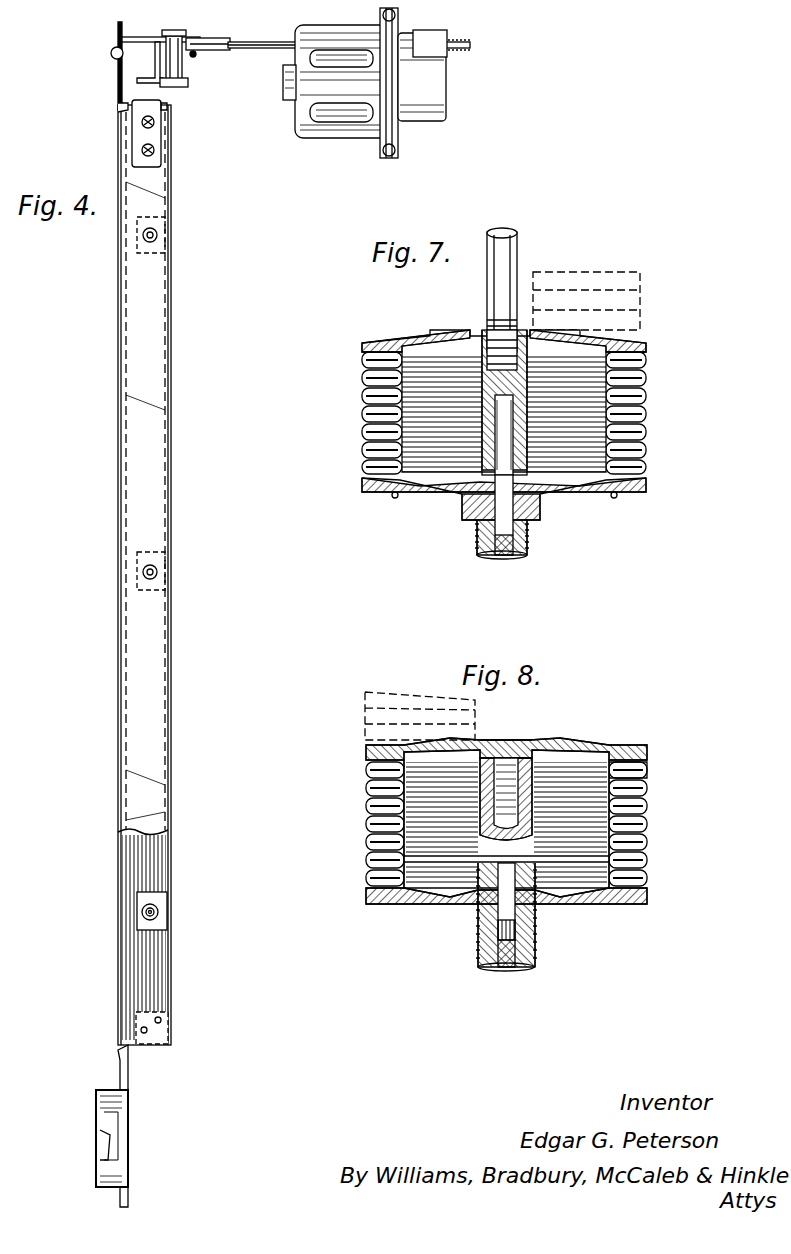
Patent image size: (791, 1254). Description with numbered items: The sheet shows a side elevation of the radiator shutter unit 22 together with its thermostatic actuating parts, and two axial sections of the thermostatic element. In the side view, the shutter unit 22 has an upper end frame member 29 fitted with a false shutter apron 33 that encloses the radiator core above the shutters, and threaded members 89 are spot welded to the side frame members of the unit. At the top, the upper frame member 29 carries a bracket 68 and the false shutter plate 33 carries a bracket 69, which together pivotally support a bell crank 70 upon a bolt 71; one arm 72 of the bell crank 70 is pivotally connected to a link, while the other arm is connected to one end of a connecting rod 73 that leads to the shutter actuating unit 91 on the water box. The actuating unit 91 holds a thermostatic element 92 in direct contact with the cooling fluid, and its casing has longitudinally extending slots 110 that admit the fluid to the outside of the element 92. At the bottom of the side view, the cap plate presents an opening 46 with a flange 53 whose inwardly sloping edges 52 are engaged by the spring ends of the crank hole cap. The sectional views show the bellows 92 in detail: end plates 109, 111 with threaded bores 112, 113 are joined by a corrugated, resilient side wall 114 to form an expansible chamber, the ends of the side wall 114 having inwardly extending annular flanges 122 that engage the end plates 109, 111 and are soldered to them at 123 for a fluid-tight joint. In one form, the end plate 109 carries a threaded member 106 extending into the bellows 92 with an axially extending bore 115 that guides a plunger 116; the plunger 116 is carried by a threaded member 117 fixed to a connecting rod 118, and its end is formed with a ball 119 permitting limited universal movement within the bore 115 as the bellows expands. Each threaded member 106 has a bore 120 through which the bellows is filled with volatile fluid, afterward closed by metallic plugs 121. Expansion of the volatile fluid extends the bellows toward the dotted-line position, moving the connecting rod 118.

In FIG. 4, the radiator shutter unit 22 is at (116, 601).
In FIG. 4, the upper end frame member 29 is at (166, 108).
In FIG. 4, the false shutter apron 33 is at (116, 37).
In FIG. 4, the opening 46 is at (96, 1104).
In FIG. 4, the inwardly sloping edges 52 is at (112, 1132).
In FIG. 4, the flange 53 is at (102, 1150).
In FIG. 4, the bracket 68 is at (160, 96).
In FIG. 4, the bracket 69 is at (143, 36).
In FIG. 4, the bell crank 70 is at (150, 66).
In FIG. 4, the bolt 71 is at (178, 34).
In FIG. 4, the arm 72 is at (198, 54).
In FIG. 4, the connecting rod 73 is at (255, 42).
In FIG. 4, the threaded members 89 is at (142, 915).
In FIG. 4, the shutter actuating unit 91 is at (448, 95).
In FIG. 8, the thermostatic element 92 is at (648, 836).
In FIG. 7, the threaded member 106 is at (528, 540).
In FIG. 8, the threaded member 106 is at (478, 938).
In FIG. 8, the end plate 109 is at (560, 898).
In FIG. 4, the longitudinally extending slots 110 is at (335, 115).
In FIG. 8, the end plate 111 is at (570, 738).
In FIG. 8, the threaded bore 112 is at (535, 900).
In FIG. 8, the threaded bore 113 is at (522, 770).
In FIG. 8, the side wall 114 is at (648, 802).
In FIG. 7, the axially extending bore 115 is at (482, 400).
In FIG. 7, the plunger 116 is at (522, 440).
In FIG. 7, the threaded member 117 is at (490, 330).
In FIG. 7, the connecting rod 118 is at (512, 258).
In FIG. 7, the ball 119 is at (475, 480).
In FIG. 7, the bore 120 is at (470, 520).
In FIG. 7, the metallic plugs 121 is at (504, 560).
In FIG. 7, the inwardly extending annular flanges 122 is at (378, 340).
In FIG. 7, the solder 123 is at (390, 340).